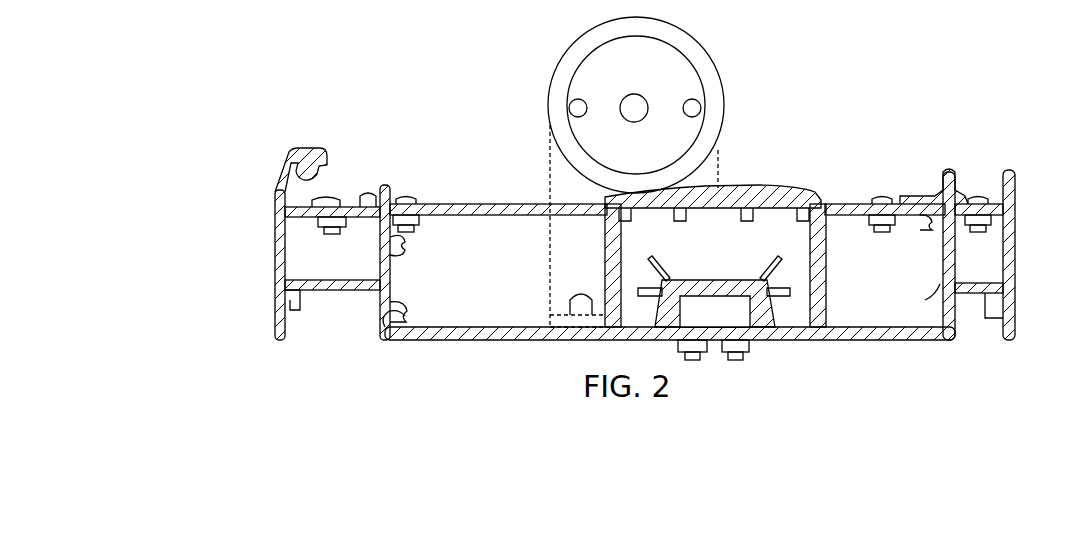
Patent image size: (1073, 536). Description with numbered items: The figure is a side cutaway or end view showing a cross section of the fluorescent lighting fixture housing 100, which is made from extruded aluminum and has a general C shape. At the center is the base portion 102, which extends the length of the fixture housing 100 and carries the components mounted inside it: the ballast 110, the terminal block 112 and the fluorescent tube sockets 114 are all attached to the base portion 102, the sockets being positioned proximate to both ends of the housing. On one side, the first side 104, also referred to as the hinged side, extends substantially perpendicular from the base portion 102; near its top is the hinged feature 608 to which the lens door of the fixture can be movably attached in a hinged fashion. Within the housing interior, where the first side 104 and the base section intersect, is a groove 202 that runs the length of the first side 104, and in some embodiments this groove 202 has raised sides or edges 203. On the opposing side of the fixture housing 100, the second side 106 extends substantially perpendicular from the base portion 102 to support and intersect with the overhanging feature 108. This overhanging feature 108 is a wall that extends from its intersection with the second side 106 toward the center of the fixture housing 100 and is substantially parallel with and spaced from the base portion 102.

The fixture housing 100 is at (876, 67).
The base portion 102 is at (503, 342).
The first side 104 is at (336, 244).
The second side 106 is at (930, 292).
The overhanging feature 108 is at (912, 192).
The ballast 110 is at (735, 186).
The terminal block 112 is at (722, 278).
The fluorescent tube sockets 114 is at (548, 100).
The groove 202 is at (401, 332).
The raised sides 203 is at (406, 322).
The hinged feature 608 is at (327, 178).